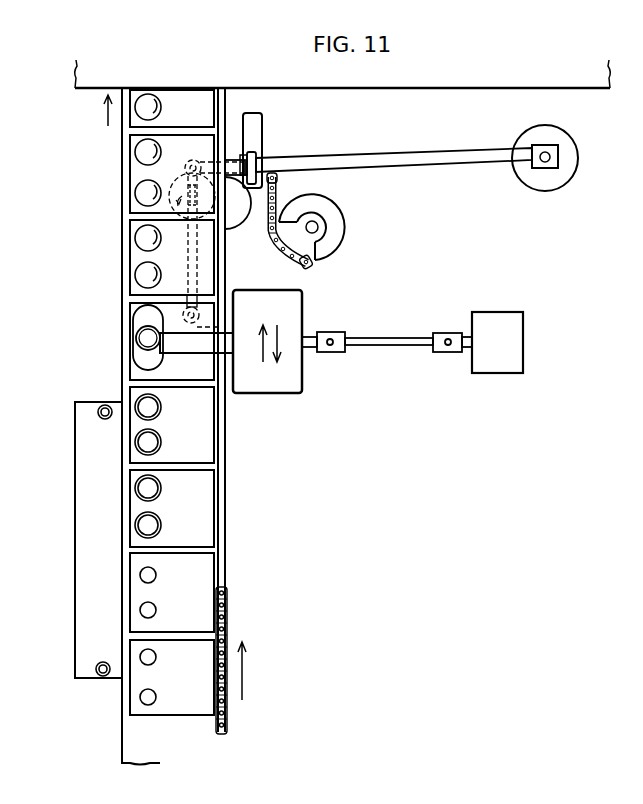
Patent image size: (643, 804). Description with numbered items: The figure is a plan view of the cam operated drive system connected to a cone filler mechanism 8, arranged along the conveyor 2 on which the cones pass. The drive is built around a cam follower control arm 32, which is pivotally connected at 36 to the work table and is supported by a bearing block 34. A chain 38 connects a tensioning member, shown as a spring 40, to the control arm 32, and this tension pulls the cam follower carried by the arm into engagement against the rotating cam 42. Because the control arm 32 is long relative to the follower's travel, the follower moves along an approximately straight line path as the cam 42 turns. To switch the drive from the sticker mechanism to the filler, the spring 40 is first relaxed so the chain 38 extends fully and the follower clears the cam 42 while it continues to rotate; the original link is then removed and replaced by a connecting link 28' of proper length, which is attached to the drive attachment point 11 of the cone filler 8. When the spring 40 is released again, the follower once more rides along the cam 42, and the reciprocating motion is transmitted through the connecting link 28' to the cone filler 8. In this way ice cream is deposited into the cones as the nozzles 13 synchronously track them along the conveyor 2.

The conveyor 2 is at (122, 183).
The cone filler mechanism 8 is at (302, 380).
The drive attachment point 11 is at (200, 322).
The nozzles 13 is at (140, 362).
The connecting link 28' is at (218, 310).
The cam follower control arm 32 is at (425, 154).
The bearing block 34 is at (263, 131).
The pivotal connection 36 is at (558, 160).
The chain 38 is at (195, 160).
The tensioning member (spring) 40 is at (345, 238).
The cam 42 is at (239, 218).